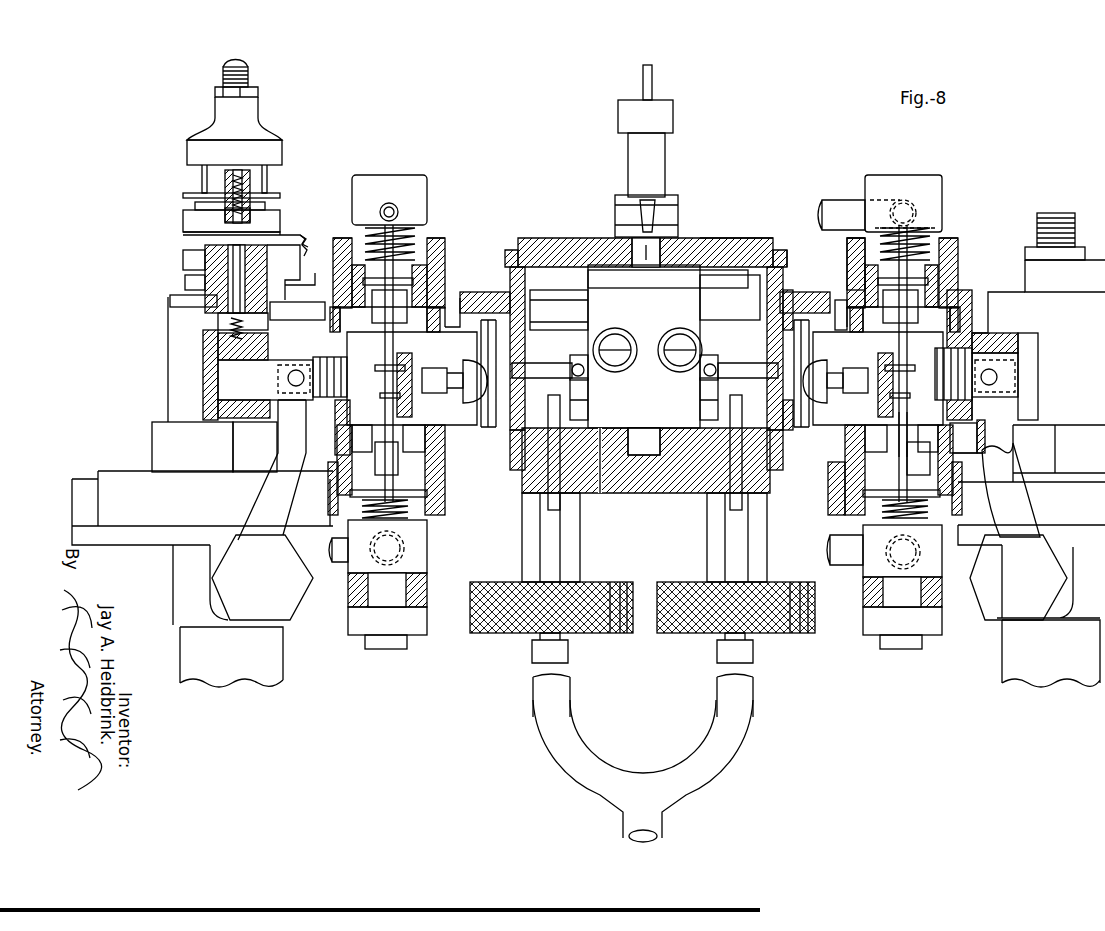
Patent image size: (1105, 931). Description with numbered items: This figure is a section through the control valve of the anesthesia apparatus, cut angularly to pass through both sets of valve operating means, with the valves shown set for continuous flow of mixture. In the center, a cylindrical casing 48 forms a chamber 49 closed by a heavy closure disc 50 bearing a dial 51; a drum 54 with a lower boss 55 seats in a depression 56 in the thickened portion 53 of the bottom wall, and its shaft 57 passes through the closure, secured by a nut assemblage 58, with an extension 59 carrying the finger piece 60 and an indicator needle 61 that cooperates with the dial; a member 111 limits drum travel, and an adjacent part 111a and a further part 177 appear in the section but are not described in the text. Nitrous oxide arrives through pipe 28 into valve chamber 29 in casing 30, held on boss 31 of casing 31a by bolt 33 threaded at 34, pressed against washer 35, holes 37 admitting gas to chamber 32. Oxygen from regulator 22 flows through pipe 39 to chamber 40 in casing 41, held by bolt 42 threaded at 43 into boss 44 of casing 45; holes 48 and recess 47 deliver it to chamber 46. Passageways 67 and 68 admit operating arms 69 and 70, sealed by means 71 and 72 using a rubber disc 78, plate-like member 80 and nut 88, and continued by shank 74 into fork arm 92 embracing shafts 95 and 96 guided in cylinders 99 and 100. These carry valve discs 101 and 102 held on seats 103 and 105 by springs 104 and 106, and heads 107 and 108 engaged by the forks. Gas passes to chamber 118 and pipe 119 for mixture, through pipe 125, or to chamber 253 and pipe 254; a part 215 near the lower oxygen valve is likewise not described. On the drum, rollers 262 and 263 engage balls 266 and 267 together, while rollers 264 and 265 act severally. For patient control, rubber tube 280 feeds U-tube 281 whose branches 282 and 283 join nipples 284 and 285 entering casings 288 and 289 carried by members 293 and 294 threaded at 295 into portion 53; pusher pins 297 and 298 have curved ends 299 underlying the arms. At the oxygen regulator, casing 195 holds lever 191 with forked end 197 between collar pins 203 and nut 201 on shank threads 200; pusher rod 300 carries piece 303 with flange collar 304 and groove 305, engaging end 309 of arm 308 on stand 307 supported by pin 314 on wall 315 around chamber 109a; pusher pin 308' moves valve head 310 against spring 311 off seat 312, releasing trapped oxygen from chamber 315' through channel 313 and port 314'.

The threaded pusher rod 300 is at (250, 76).
The piece 303 is at (195, 147).
The annular groove 305 is at (202, 170).
The end of arm 309 is at (250, 185).
The flange collar 304 is at (190, 195).
The threaded portion of cylindrical shank 200 is at (195, 204).
The arm 308 is at (190, 211).
The nut 201 is at (183, 226).
The wedge shaped forked end of lever 197 is at (215, 240).
The pusher pin 308' is at (198, 277).
The port 314' is at (150, 261).
The channel 313 is at (185, 283).
The valve seat 312 is at (170, 300).
The valve head 310 is at (218, 318).
The bracket stand 307 is at (228, 322).
The valve chamber 315' is at (169, 373).
The spring 311 is at (218, 348).
The bolt 42 is at (218, 372).
The central recess 47 is at (278, 378).
The holes / central cylindrical casing 48 is at (288, 380).
The washer 35 is at (268, 425).
The casing of regulating valve 195 is at (168, 410).
The regulator valve mechanism 22 is at (86, 490).
The pipe 39 is at (272, 502).
The chamber 40 is at (290, 418).
The cylinder 215 is at (338, 562).
The boss 44 is at (337, 415).
The valve seat 105 is at (333, 490).
The casing 41 is at (305, 312).
The pins 203 is at (288, 272).
The pin 314 is at (308, 277).
The lever 191 is at (308, 238).
The valve seat 103 is at (345, 240).
The pipe 125 is at (389, 203).
The spring 104 is at (418, 235).
The valve chamber 118 is at (418, 245).
The valve disc 101 is at (430, 295).
The chamber 109a is at (428, 300).
The casing 45 is at (458, 317).
The nut 88 is at (490, 293).
The wall 315 is at (382, 318).
The fork arm 92 is at (410, 353).
The head 107 is at (388, 371).
The head 108 is at (395, 395).
The sealing means 72 is at (485, 362).
The flexible rubber disc 78 is at (478, 392).
The operating arm 70 is at (556, 363).
The threaded portion 43 is at (385, 425).
The valve chamber 46 is at (445, 455).
The cylinder 100 is at (445, 470).
The valve disc 102 is at (428, 494).
The chamber 253 is at (418, 515).
The spring 106 is at (427, 530).
The pusher pin 298 is at (545, 505).
The pusher pin 297 is at (730, 505).
The passageway 68 is at (515, 470).
The passageway 67 is at (780, 470).
The chamber 49 is at (553, 268).
The closure disc 50 is at (710, 248).
The dial 51 is at (708, 240).
The member 111 is at (745, 268).
The step 111a is at (805, 238).
The drum 54 is at (603, 283).
The indicator needle 61 is at (640, 222).
The nut assemblage 58 is at (675, 215).
The shaft 57 is at (660, 250).
The extension 59 is at (665, 150).
The operating finger piece 60 is at (653, 78).
The chamber 177 is at (568, 286).
The ball 267 is at (578, 363).
The ball 266 is at (710, 362).
The roller valve operator 265 is at (615, 328).
The roller valve operator 264 is at (665, 335).
The valve operating roller 263 is at (588, 385).
The valve operating roller 262 is at (700, 385).
The curved ends 299 is at (588, 398).
The operating arm 69 is at (742, 363).
The thickened portion 53 is at (640, 495).
The supporting depression 56 is at (622, 465).
The lower boss 55 is at (658, 455).
The member 294 is at (560, 568).
The member 293 is at (718, 548).
The casing 289 is at (510, 633).
The casing 288 is at (783, 633).
The nipple 285 is at (555, 645).
The nipple 284 is at (725, 650).
The branch 283 is at (545, 700).
The branch 282 is at (745, 688).
The U-tube 281 is at (720, 770).
The rubber tube 280 is at (660, 828).
The pipe 119 is at (842, 205).
The cylinder 99 is at (865, 300).
The casing 31a is at (845, 300).
The plate-like member 80 is at (810, 348).
The sealing means 71 is at (835, 370).
The shank 74 is at (862, 360).
The shaft 95 is at (908, 350).
The shaft 96 is at (908, 415).
The threaded portion 34 is at (960, 330).
The valve chamber 29 is at (1000, 335).
The casing 30 is at (1030, 335).
The bolt 33 is at (1020, 378).
The holes 37 is at (997, 377).
The boss 31 is at (976, 432).
The pipe 28 is at (1020, 503).
The valve chamber 32 is at (845, 463).
The threads 295 is at (833, 495).
The pipe 254 is at (848, 568).